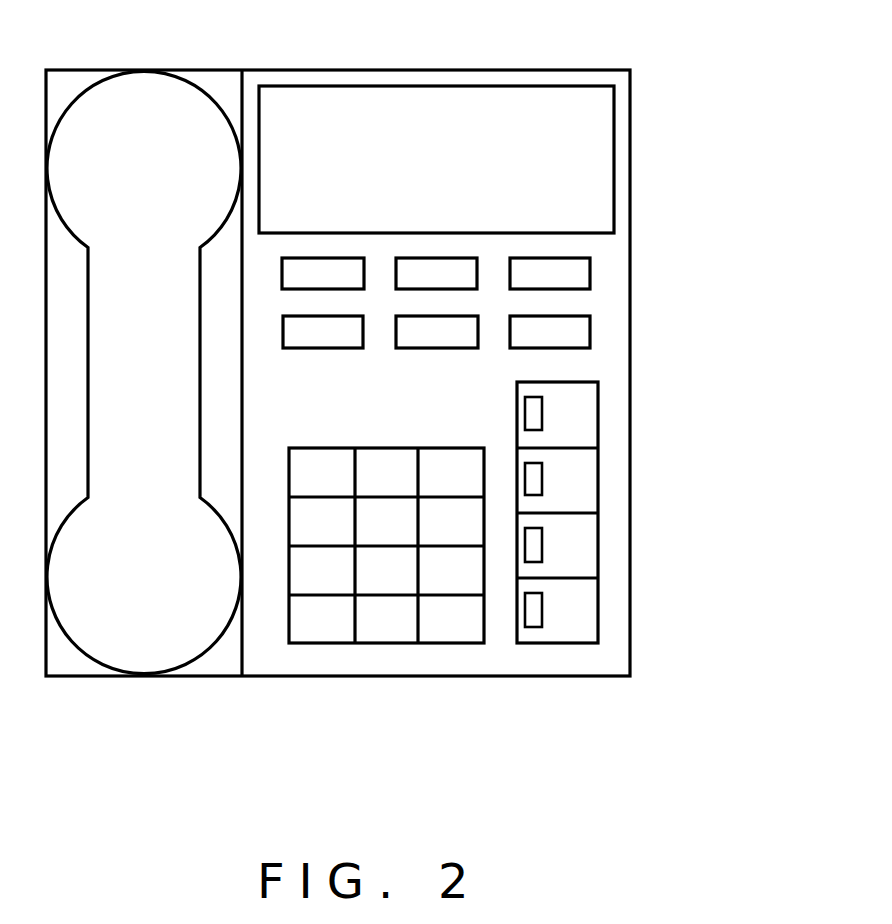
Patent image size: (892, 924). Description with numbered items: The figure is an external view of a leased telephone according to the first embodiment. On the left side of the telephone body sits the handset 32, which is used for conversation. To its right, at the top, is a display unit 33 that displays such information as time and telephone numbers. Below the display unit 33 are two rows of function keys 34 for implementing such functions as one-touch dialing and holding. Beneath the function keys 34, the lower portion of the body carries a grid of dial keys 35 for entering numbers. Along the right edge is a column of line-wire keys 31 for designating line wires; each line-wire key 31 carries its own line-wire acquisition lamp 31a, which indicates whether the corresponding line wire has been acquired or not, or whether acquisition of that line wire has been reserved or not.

The line-wire key 31 is at (598, 410).
The line-wire acquisition lamp 31a is at (542, 412).
The handset 32 is at (148, 657).
The display unit 33 is at (509, 101).
The function key 34 is at (580, 277).
The dial key 35 is at (382, 645).